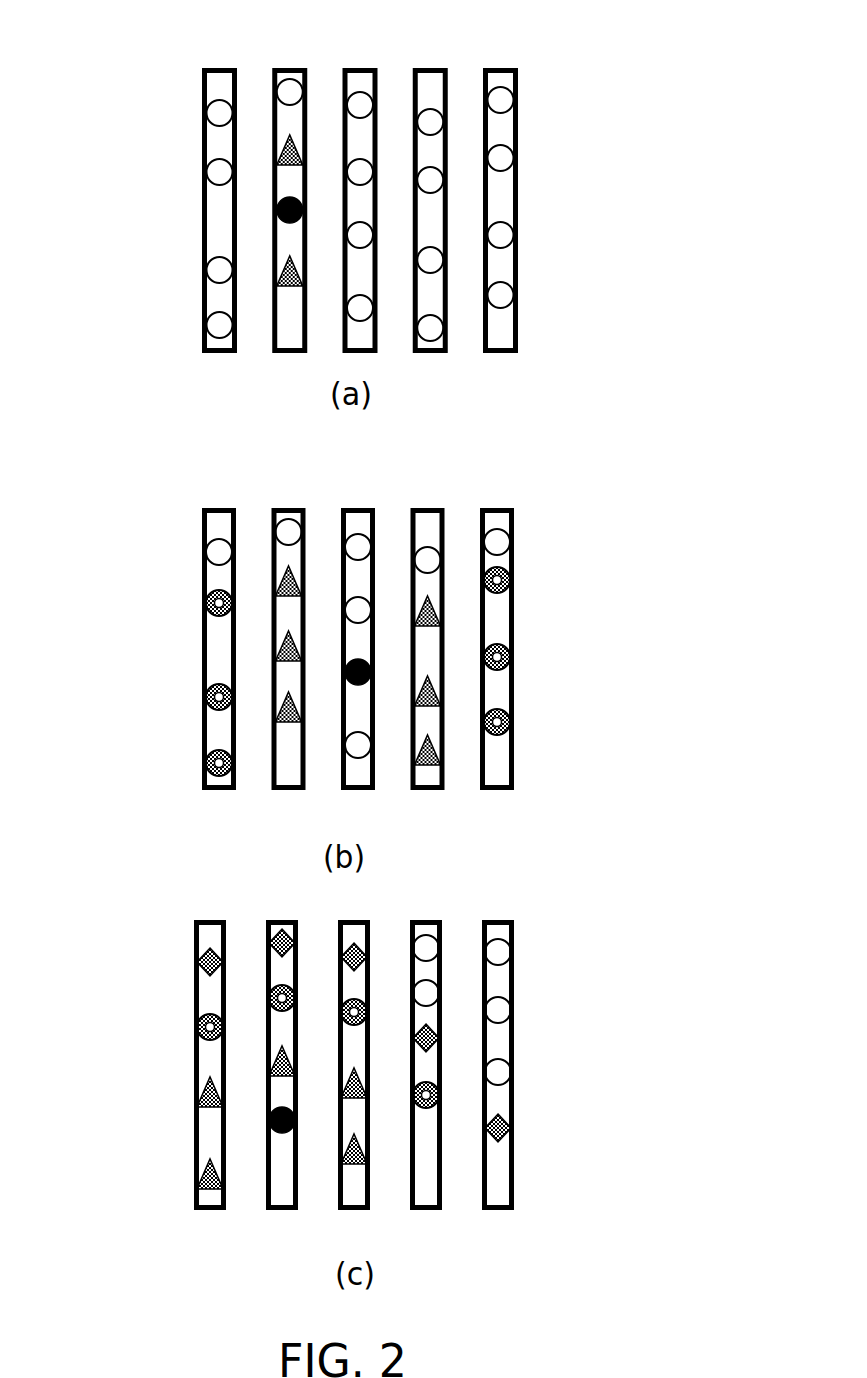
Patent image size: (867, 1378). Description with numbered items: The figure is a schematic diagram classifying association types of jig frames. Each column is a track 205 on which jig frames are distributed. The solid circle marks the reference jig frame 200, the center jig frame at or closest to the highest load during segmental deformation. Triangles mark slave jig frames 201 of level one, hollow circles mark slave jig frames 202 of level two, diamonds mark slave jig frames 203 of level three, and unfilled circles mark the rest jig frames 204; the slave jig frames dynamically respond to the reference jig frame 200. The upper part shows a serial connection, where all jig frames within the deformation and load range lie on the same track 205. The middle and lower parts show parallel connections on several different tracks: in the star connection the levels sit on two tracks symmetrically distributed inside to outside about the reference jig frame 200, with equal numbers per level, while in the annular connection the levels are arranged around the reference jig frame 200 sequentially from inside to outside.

The reference jig frame 200 is at (284, 211).
The slave jig frames of level one 201 is at (298, 578).
The slave jig frames of level two 202 is at (210, 762).
The slave jig frames of level three 203 is at (200, 963).
The rest jig frames 204 is at (290, 510).
The track 205 is at (431, 68).